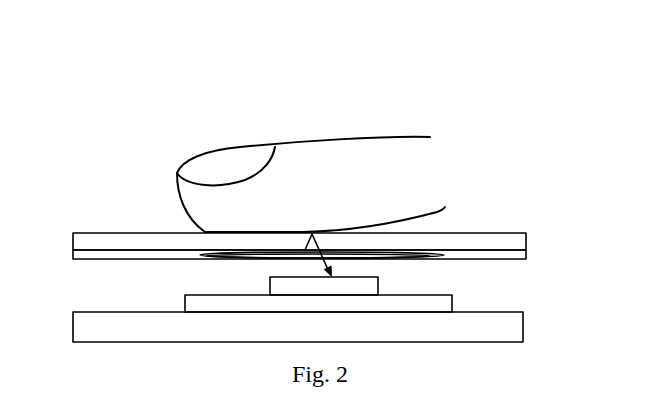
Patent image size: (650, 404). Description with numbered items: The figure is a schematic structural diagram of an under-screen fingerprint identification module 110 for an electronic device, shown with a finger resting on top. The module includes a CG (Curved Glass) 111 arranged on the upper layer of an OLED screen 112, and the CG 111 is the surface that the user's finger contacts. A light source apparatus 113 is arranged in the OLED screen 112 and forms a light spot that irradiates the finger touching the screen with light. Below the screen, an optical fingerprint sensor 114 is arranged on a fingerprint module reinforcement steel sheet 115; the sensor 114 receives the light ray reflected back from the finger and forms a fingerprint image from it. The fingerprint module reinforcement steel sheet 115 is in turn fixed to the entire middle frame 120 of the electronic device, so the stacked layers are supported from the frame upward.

The under-screen fingerprint identification module 110 is at (86, 89).
The CG (Curved Glass) 111 is at (508, 242).
The OLED screen 112 is at (92, 257).
The light source apparatus 113 is at (207, 253).
The optical fingerprint sensor 114 is at (372, 288).
The fingerprint module reinforcement steel sheet 115 is at (447, 303).
The middle frame 120 is at (512, 333).